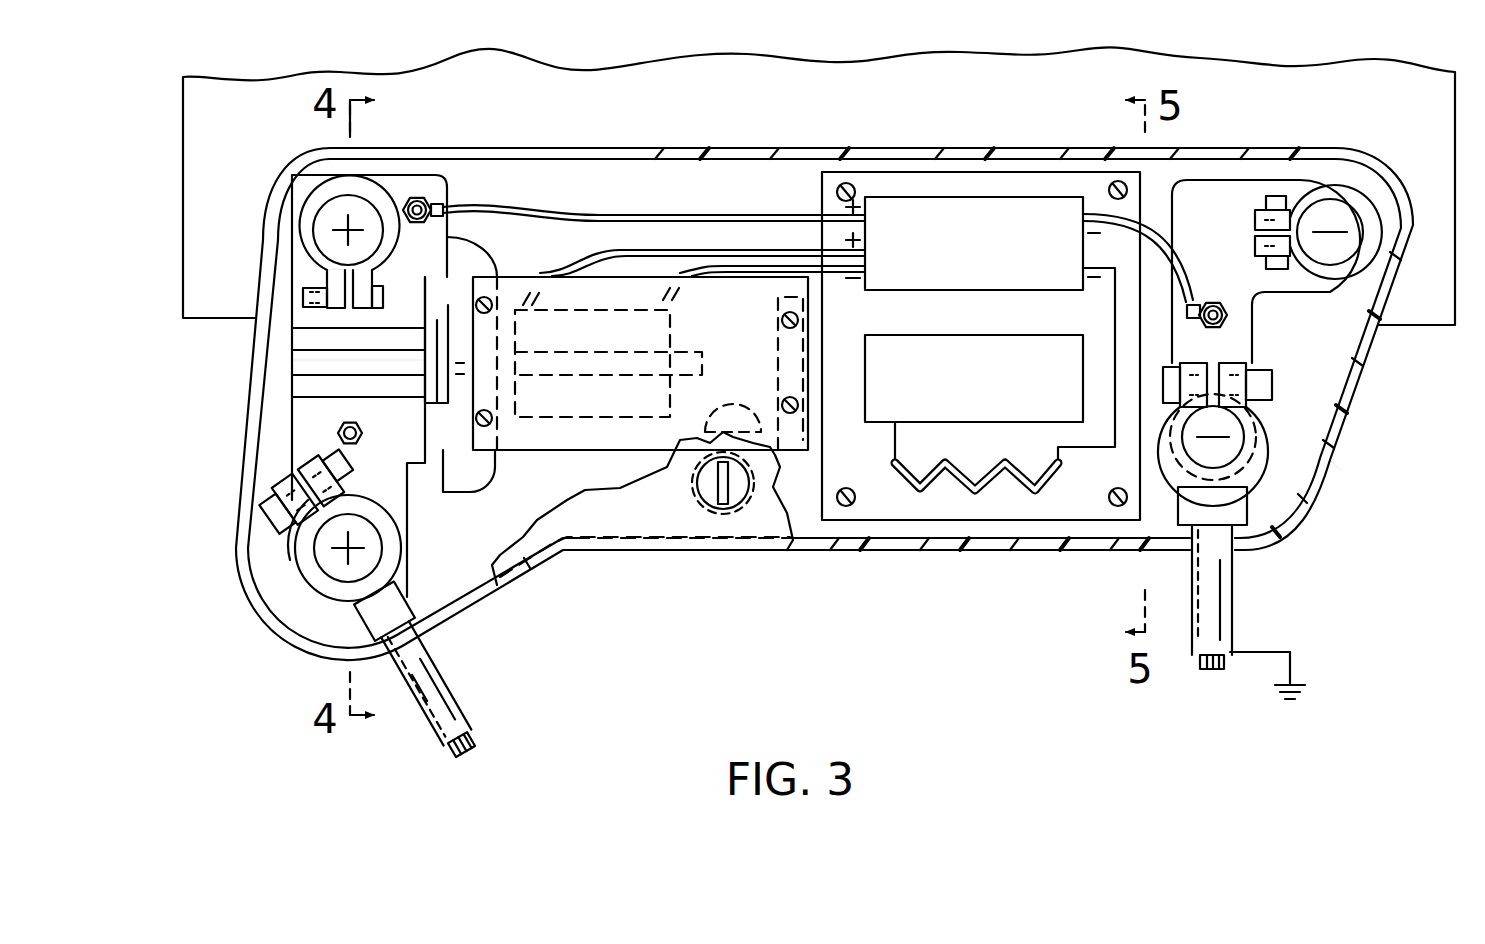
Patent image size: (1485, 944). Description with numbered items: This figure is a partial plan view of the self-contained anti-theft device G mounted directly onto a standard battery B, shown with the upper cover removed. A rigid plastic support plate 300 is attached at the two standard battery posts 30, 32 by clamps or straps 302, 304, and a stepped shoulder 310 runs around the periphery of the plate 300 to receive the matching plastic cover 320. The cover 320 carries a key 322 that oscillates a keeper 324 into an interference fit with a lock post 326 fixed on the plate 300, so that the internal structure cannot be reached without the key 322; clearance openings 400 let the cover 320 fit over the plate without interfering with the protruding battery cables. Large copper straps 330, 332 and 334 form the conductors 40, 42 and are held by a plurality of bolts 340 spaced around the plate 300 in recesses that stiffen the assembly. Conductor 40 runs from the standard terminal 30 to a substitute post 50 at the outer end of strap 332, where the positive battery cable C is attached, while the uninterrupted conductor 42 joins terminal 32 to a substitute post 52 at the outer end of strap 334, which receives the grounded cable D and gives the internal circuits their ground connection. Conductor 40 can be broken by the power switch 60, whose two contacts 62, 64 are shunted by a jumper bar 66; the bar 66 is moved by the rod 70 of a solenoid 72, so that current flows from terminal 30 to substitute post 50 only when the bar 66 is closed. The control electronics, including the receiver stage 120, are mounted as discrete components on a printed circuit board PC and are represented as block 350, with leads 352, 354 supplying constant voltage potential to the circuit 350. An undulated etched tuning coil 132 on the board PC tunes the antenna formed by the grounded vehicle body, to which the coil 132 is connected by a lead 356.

The battery terminal 30 is at (365, 212).
The battery terminal 32 is at (1338, 215).
The conductor 40 is at (305, 417).
The conductor 42 is at (1248, 318).
The substitute post 50 is at (335, 580).
The substitute post 52 is at (1233, 438).
The power switch 60 is at (298, 363).
The contact 62 is at (300, 333).
The contact 64 is at (305, 385).
The jumper bar 66 is at (437, 330).
The rod 70 is at (458, 378).
The solenoid 72 is at (547, 420).
The receiver stage 120 is at (945, 345).
The tuning coil 132 is at (975, 495).
The support plate 300 is at (1290, 450).
The clamp 302 is at (305, 245).
The clamp 304 is at (1310, 195).
The stepped shoulder 310 is at (555, 147).
The cover 320 is at (640, 523).
The key 322 is at (720, 515).
The keeper 324 is at (805, 540).
The lock post 326 is at (740, 400).
The copper strap 330 is at (300, 293).
The copper strap 332 is at (305, 447).
The copper strap 334 is at (1248, 348).
The bolt 340 is at (440, 205).
The circuit block 350 is at (1015, 205).
The lead 352 is at (680, 215).
The lead 354 is at (1153, 253).
The lead 356 is at (1105, 323).
The clearance opening 400 is at (1234, 563).
The battery B is at (180, 207).
The positive battery cable C is at (462, 698).
The grounded battery cable D is at (1240, 610).
The anti-theft device G is at (841, 624).
The printed circuit board PC is at (958, 166).